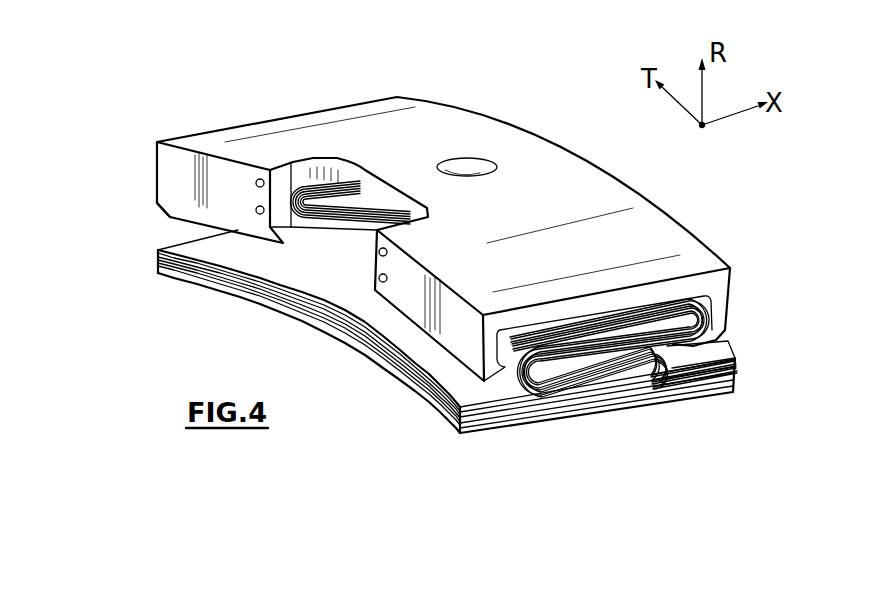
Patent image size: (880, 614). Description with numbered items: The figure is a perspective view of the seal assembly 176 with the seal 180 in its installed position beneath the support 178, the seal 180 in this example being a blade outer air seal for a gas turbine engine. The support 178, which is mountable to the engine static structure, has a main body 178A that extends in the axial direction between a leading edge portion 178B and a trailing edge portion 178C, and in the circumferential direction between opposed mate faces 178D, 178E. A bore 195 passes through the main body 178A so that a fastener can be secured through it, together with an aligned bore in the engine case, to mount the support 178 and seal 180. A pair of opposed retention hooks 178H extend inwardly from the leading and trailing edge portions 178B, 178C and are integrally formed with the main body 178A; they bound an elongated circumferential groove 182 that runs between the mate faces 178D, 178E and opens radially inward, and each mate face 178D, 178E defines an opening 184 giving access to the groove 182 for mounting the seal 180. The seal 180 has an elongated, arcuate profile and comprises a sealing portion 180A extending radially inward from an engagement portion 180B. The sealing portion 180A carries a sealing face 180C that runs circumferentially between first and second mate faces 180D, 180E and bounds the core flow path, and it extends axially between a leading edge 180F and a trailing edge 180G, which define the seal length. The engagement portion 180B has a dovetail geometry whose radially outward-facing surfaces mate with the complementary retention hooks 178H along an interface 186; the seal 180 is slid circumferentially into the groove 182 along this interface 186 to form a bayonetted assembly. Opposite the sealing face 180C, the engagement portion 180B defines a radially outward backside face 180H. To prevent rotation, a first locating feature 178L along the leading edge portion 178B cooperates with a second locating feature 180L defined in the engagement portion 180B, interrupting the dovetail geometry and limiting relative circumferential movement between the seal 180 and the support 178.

The seal assembly 176 is at (211, 68).
The support 178 is at (434, 90).
The main body 178A is at (535, 158).
The leading edge portion 178B is at (173, 182).
The trailing edge portion 178C is at (733, 300).
The mate face 178D is at (713, 322).
The mate face 178E is at (152, 163).
The retention hooks 178H is at (522, 368).
The first locating feature 178L is at (293, 177).
The bore 195 is at (467, 163).
The seal 180 is at (146, 260).
The sealing portion 180A is at (633, 405).
The engagement portion 180B is at (667, 335).
The sealing face 180C is at (668, 400).
The first mate face 180D is at (693, 385).
The second mate face 180E is at (157, 272).
The leading edge 180F is at (240, 287).
The trailing edge 180G is at (733, 372).
The backside face 180H is at (623, 312).
The second locating feature 180L is at (363, 193).
The groove 182 is at (483, 385).
The opening 184 is at (513, 362).
The interface 186 is at (617, 375).